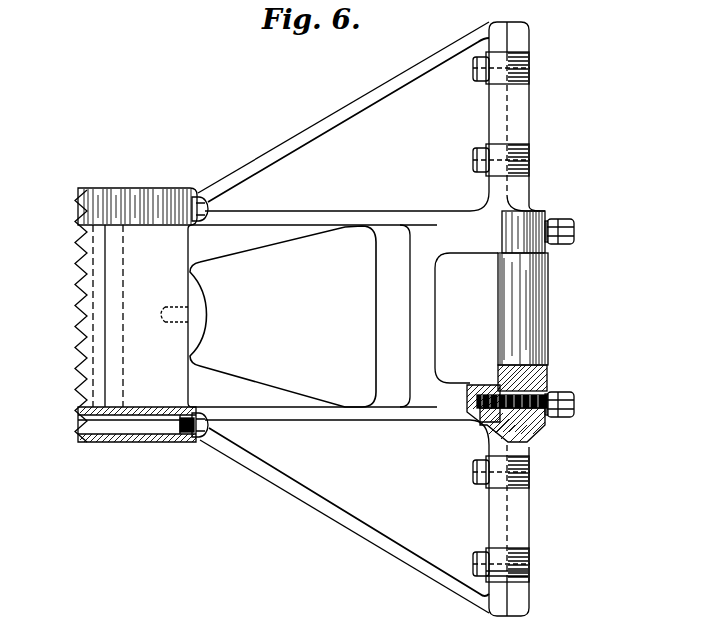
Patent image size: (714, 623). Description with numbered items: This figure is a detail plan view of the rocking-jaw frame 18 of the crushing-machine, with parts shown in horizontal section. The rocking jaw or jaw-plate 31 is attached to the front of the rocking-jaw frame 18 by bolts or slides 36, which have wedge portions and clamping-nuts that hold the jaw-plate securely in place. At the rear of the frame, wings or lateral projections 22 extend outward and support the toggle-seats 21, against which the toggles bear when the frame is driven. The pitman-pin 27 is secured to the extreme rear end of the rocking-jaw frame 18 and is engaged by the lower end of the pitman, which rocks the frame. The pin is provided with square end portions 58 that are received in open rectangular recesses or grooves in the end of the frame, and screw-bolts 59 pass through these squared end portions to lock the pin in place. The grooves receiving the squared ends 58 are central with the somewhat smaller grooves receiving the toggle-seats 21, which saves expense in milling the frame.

The rocking-jaw frame 18 is at (303, 216).
The toggle-seats 21 is at (527, 440).
The wings 22 is at (485, 519).
The pitman-pin 27 is at (530, 317).
The rocking jaw 31 is at (78, 325).
The bolts or slides 36 is at (138, 427).
The square end portions 58 is at (538, 426).
The screw-bolts 59 is at (576, 232).